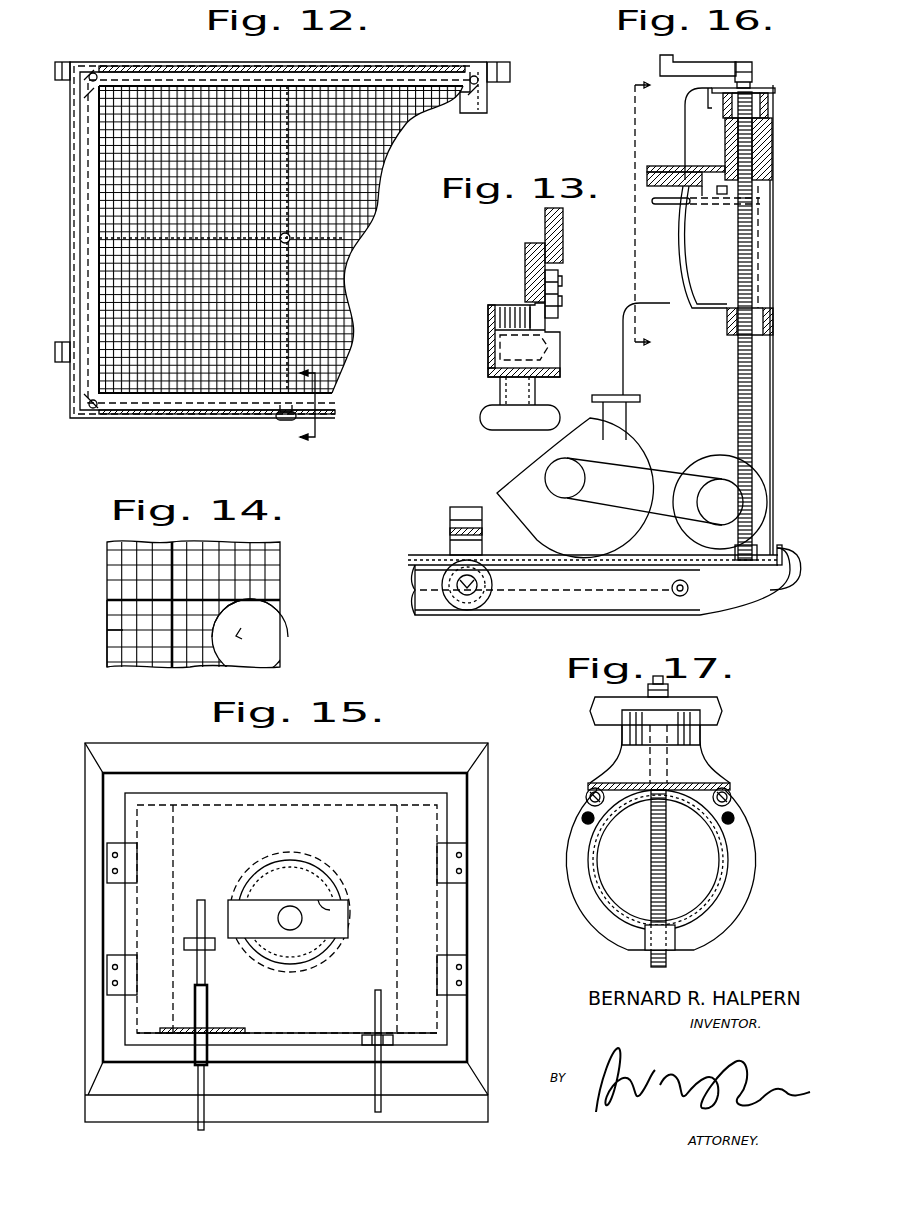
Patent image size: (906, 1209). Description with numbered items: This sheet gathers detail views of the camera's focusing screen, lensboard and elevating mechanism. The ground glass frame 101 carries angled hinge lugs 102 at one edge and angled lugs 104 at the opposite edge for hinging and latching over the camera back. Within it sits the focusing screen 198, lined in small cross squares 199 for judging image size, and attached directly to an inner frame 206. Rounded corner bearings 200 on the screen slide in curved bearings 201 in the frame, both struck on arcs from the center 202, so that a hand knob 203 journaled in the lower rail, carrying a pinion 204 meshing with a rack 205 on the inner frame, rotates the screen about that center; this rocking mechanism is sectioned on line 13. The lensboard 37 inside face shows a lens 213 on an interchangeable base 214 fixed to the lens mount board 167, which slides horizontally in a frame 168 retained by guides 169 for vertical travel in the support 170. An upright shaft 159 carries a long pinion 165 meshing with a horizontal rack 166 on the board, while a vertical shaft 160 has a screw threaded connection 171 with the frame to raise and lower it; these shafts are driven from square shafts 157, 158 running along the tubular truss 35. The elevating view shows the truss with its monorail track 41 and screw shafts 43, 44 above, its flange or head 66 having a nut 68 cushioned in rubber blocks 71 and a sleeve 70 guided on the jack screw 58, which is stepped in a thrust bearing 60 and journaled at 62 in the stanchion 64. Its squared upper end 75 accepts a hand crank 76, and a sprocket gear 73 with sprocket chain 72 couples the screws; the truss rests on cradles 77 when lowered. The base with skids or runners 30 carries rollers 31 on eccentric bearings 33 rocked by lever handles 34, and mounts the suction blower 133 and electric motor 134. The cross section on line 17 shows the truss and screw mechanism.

In FIG. 12, the ground glass frame 101 is at (410, 68).
In FIG. 13, the ground glass frame 101 is at (490, 360).
In FIG. 12, the angled hinge lugs 102 is at (500, 65).
In FIG. 12, the angled lugs 104 is at (62, 62).
In FIG. 12, the focusing screen 198 is at (108, 188).
In FIG. 13, the focusing screen 198 is at (563, 240).
In FIG. 14, the focusing screen 198 is at (107, 578).
In FIG. 14, the small cross squares 199 is at (110, 630).
In FIG. 12, the rounded corner bearings 200 is at (92, 72).
In FIG. 12, the curved bearings 201 is at (95, 70).
In FIG. 12, the center of the screen 202 is at (290, 242).
In FIG. 14, the center of the screen 202 is at (270, 644).
In FIG. 12, the hand knob 203 is at (278, 420).
In FIG. 13, the hand knob 203 is at (482, 415).
In FIG. 13, the pinion 204 is at (502, 307).
In FIG. 13, the rack 205 is at (558, 306).
In FIG. 12, the inner frame 206 is at (368, 68).
In FIG. 13, the inner frame 206 is at (525, 252).
In FIG. 12, the line 13— 13 is at (307, 405).
In FIG. 16, the line 17— 17 is at (654, 214).
In FIG. 15, the lensboard 37 is at (82, 790).
In FIG. 15, the support 170 is at (478, 772).
In FIG. 15, the guides 169 is at (118, 862).
In FIG. 15, the lens mount board 167 is at (397, 826).
In FIG. 15, the frame 168 is at (442, 925).
In FIG. 15, the upright shaft 159 is at (200, 900).
In FIG. 15, the vertical shaft 160 is at (378, 990).
In FIG. 15, the long pinion 165 is at (208, 1005).
In FIG. 15, the horizontal rack 166 is at (240, 1028).
In FIG. 15, the screw threaded connection 171 is at (385, 1045).
In FIG. 15, the lens 213 is at (300, 903).
In FIG. 15, the base 214 is at (340, 907).
In FIG. 16, the skids or runners 30 is at (735, 600).
In FIG. 16, the rollers 31 is at (478, 600).
In FIG. 16, the eccentric bearings 33 is at (460, 605).
In FIG. 16, the lever handles 34 is at (590, 590).
In FIG. 16, the tubular truss 35 is at (708, 310).
In FIG. 17, the tubular truss 35 is at (600, 895).
In FIG. 16, the monorail track 41 is at (665, 166).
In FIG. 16, the screw shaft 43 is at (647, 178).
In FIG. 17, the screw shaft 43 is at (586, 795).
In FIG. 17, the screw shaft 44 is at (731, 797).
In FIG. 16, the jack screw 58 is at (738, 405).
In FIG. 17, the jack screw 58 is at (668, 965).
In FIG. 16, the thrust bearing 60 is at (795, 572).
In FIG. 16, the journal 62 is at (760, 90).
In FIG. 17, the journal 62 is at (650, 690).
In FIG. 16, the stanchion 64 is at (774, 380).
In FIG. 17, the stanchion 64 is at (718, 719).
In FIG. 16, the flange or head 66 is at (772, 158).
In FIG. 17, the flange or head 66 is at (712, 770).
In FIG. 16, the nut 68 is at (770, 98).
In FIG. 16, the sleeve 70 is at (773, 322).
In FIG. 17, the sleeve 70 is at (648, 940).
In FIG. 17, the rubber blocks 71 is at (680, 718).
In FIG. 16, the sprocket chain 72 is at (412, 562).
In FIG. 16, the sprocket gear 73 is at (760, 550).
In FIG. 16, the squared upper end 75 is at (752, 65).
In FIG. 17, the squared upper end 75 is at (665, 680).
In FIG. 16, the hand crank 76 is at (710, 62).
In FIG. 16, the cradles or rests 77 is at (465, 510).
In FIG. 16, the suction blower 133 is at (618, 462).
In FIG. 16, the electric motor 134 is at (755, 490).
In FIG. 16, the square shaft 157 is at (660, 204).
In FIG. 17, the square shaft 157 is at (582, 819).
In FIG. 17, the square shaft 158 is at (734, 819).